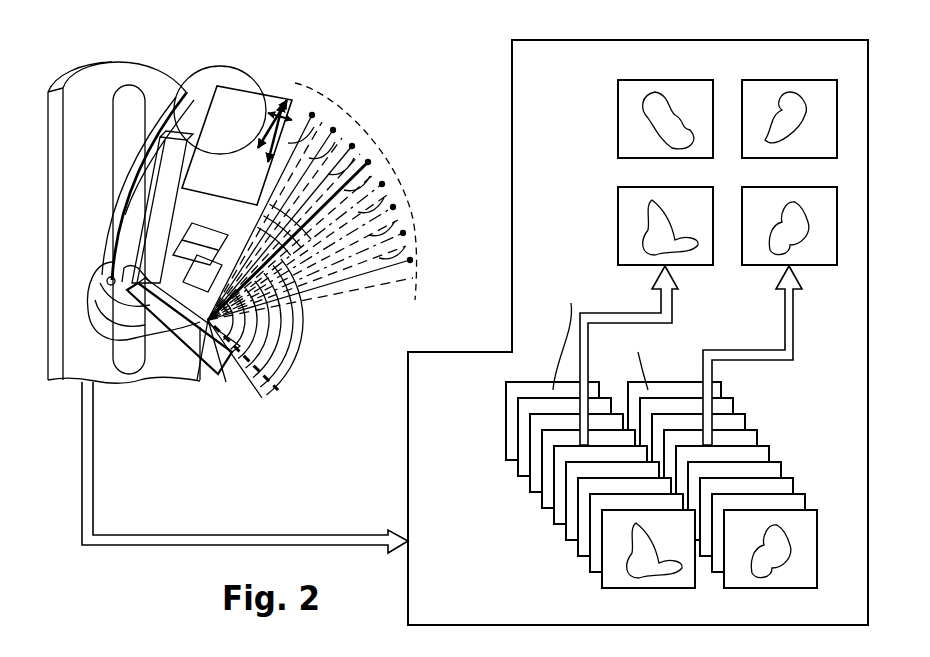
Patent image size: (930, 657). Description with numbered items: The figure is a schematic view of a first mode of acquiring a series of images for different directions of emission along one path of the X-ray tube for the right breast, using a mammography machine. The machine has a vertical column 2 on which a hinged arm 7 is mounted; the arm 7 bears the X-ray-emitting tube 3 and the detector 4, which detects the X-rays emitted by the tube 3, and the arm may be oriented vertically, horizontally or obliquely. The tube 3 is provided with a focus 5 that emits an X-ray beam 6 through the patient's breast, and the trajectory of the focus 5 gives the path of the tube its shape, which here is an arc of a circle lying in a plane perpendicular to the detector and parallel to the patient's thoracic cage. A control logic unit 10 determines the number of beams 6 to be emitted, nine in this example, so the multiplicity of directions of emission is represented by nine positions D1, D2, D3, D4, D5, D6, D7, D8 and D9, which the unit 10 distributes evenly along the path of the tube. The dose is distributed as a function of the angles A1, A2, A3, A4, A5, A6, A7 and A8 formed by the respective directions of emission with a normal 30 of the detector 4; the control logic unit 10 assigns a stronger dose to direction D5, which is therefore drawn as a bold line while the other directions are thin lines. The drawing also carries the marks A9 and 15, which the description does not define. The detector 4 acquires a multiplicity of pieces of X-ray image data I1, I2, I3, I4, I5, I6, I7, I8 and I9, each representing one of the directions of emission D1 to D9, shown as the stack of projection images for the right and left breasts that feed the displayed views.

The vertical column 2 is at (128, 70).
The X-ray-emitting tube 3 is at (257, 80).
The detector 4 is at (157, 382).
The focus 5 is at (285, 92).
The X-ray beam 6 is at (264, 130).
The hinged arm 7 is at (170, 100).
The control logic unit 10 is at (823, 118).
The processing of projection images 15 is at (820, 266).
The normal of the detector 30 is at (265, 387).
The direction of emission D1 is at (406, 266).
The direction of emission D2 is at (407, 257).
The direction of emission D3 is at (397, 235).
The direction of emission D4 is at (386, 206).
The direction of emission D5 is at (372, 166).
The direction of emission D6 is at (357, 148).
The direction of emission D7 is at (340, 130).
The direction of emission D8 is at (320, 118).
The direction of emission D9 is at (262, 167).
The angle A1 is at (197, 382).
The angle A2 is at (226, 382).
The angle A3 is at (240, 380).
The angle A4 is at (300, 320).
The angle A5 is at (298, 347).
The angle A6 is at (295, 352).
The angle A7 is at (290, 370).
The angle A8 is at (286, 378).
The detector arc position 9 A9 is at (282, 385).
The X-ray image data I1 is at (601, 582).
The X-ray image data I2 is at (596, 571).
The X-ray image data I3 is at (578, 547).
The X-ray image data I4 is at (566, 518).
The X-ray image data I5 is at (555, 492).
The X-ray image data I6 is at (543, 466).
The X-ray image data I7 is at (531, 440).
The X-ray image data I8 is at (519, 410).
The X-ray image data I9 is at (507, 382).